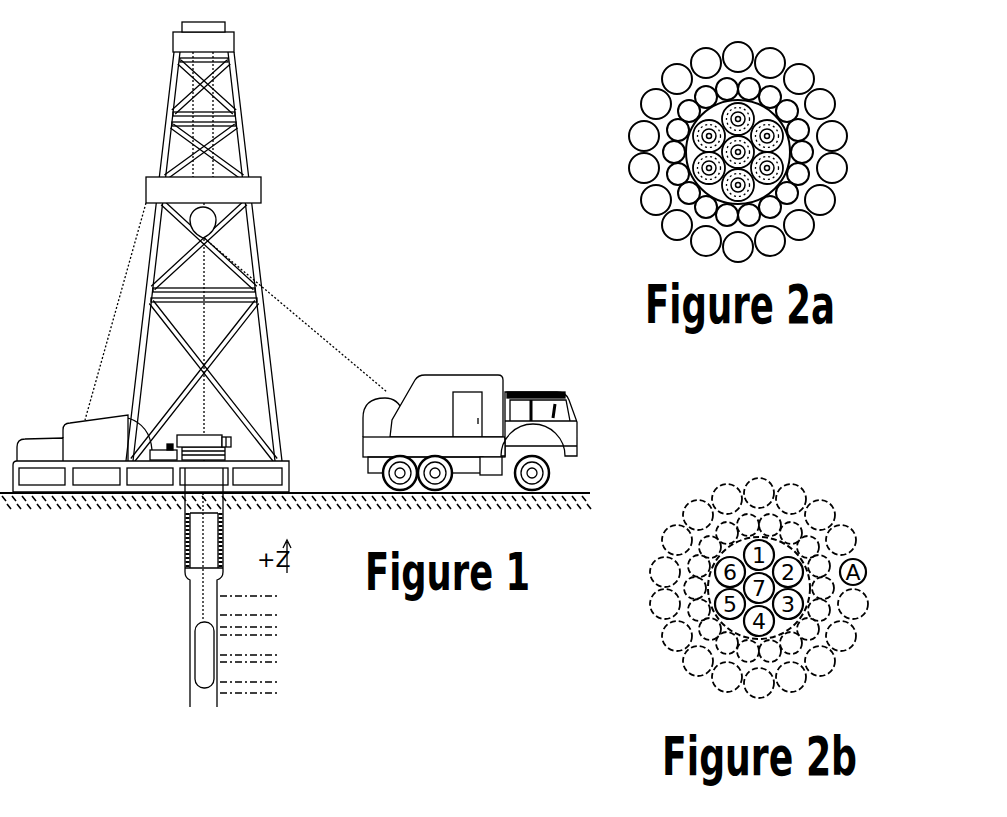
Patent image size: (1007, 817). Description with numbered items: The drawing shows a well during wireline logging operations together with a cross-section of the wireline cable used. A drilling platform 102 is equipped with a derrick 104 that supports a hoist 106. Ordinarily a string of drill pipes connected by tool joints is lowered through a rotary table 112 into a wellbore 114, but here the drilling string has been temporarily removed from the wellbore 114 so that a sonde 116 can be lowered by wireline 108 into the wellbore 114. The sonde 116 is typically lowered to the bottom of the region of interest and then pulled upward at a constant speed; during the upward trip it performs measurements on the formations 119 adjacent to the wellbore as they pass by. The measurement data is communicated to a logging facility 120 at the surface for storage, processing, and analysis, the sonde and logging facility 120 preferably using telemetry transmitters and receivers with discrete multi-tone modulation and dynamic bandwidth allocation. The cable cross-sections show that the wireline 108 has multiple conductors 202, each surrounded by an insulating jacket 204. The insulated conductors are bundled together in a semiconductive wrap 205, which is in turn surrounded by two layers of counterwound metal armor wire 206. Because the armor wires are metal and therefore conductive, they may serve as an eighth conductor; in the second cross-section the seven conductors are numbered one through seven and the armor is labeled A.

In FIG. 1, the drilling platform 102 is at (288, 467).
In FIG. 1, the derrick 104 is at (278, 428).
In FIG. 1, the hoist 106 is at (213, 218).
In FIG. 1, the wireline 108 is at (278, 297).
In FIG. 1, the rotary table 112 is at (222, 435).
In FIG. 1, the wellbore 114 is at (190, 581).
In FIG. 1, the sonde 116 is at (199, 645).
In FIG. 1, the formations 119 is at (277, 596).
In FIG. 1, the logging facility 120 is at (428, 373).
In FIG. 2A, the conductors 202 is at (707, 168).
In FIG. 2A, the insulating jacket 204 is at (766, 137).
In FIG. 2A, the semiconductive wrap 205 is at (790, 137).
In FIG. 2A, the armor wire 206 is at (815, 190).